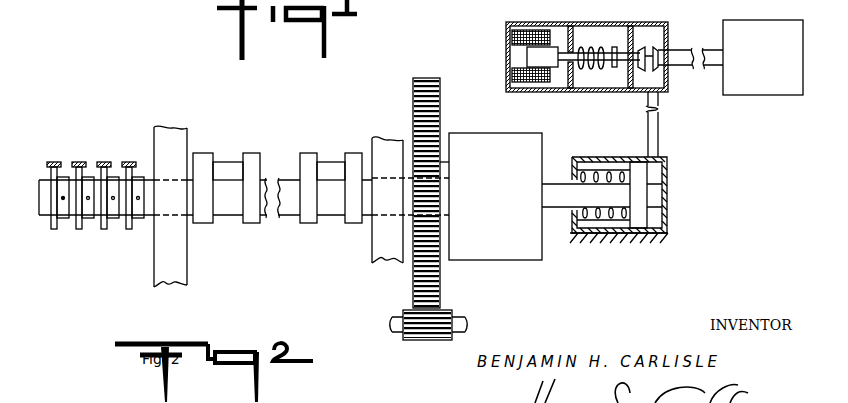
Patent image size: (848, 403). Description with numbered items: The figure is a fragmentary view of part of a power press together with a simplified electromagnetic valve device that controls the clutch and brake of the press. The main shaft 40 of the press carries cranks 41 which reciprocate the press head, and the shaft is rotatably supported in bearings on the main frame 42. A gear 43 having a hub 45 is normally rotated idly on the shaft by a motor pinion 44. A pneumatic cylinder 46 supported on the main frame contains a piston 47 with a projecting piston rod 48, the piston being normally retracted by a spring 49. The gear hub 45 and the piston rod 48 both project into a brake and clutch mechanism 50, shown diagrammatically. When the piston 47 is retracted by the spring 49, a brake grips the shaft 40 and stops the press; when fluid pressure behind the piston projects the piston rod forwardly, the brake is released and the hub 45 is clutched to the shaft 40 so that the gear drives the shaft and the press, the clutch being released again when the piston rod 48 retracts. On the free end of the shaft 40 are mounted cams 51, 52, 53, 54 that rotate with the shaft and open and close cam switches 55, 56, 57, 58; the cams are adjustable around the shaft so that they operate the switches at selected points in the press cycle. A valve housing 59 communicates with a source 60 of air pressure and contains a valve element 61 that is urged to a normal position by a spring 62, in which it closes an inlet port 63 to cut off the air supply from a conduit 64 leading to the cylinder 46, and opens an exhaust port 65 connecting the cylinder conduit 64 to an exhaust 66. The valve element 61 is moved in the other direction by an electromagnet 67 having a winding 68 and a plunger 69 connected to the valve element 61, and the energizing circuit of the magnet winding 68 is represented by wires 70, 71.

The main shaft 40 is at (42, 200).
The cranks 41 is at (224, 163).
The main frame 42 is at (170, 283).
The gear 43 is at (414, 280).
The motor pinion 44 is at (404, 311).
The hub 45 is at (453, 235).
The pneumatic cylinder 46 is at (665, 169).
The piston 47 is at (639, 166).
The piston rod 48 is at (598, 175).
The spring 49 is at (585, 170).
The brake and clutch mechanism 50 is at (496, 261).
The cam 51 is at (56, 229).
The cam 52 is at (80, 229).
The cam 53 is at (105, 229).
The cam 54 is at (130, 229).
The cam switch 55 is at (53, 162).
The cam switch 56 is at (78, 162).
The cam switch 57 is at (104, 162).
The cam switch 58 is at (130, 162).
The valve housing 59 is at (587, 92).
The source of air pressure 60 is at (774, 66).
The valve element 61 is at (657, 47).
The spring 62 is at (576, 50).
The inlet port 63 is at (668, 50).
The conduit 64 is at (660, 111).
The exhaust port 65 is at (640, 47).
The exhaust 66 is at (598, 47).
The electromagnet 67 is at (527, 55).
The winding 68 is at (530, 30).
The plunger 69 is at (515, 66).
The wire 70 is at (510, 22).
The wire 71 is at (512, 90).